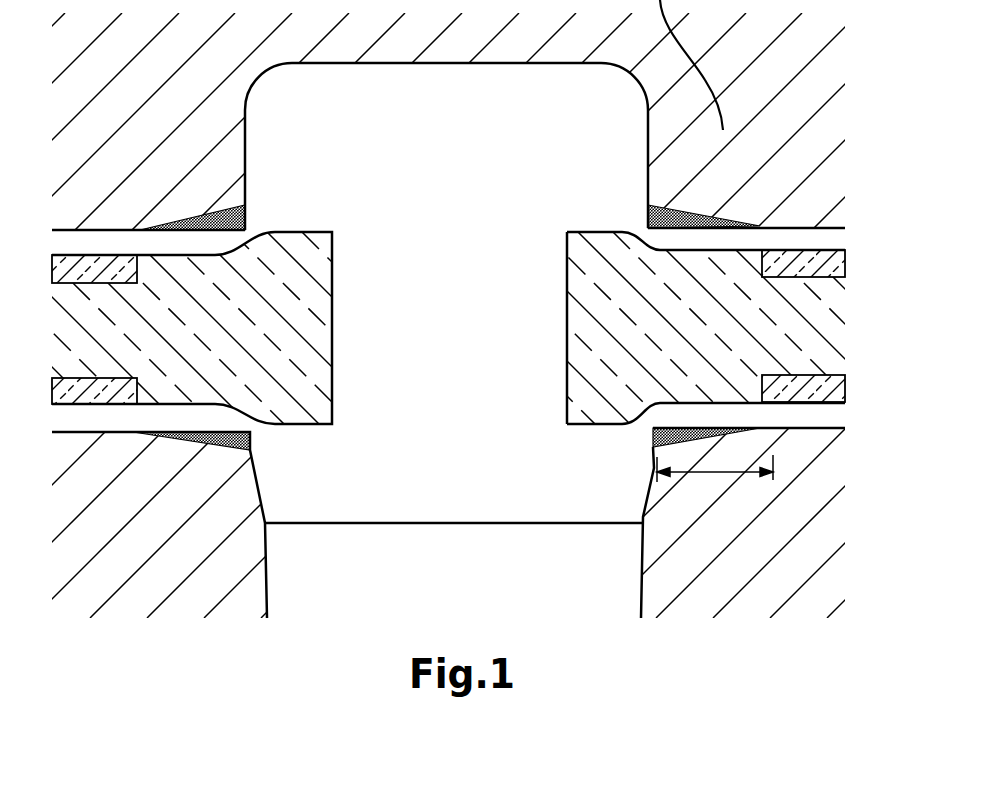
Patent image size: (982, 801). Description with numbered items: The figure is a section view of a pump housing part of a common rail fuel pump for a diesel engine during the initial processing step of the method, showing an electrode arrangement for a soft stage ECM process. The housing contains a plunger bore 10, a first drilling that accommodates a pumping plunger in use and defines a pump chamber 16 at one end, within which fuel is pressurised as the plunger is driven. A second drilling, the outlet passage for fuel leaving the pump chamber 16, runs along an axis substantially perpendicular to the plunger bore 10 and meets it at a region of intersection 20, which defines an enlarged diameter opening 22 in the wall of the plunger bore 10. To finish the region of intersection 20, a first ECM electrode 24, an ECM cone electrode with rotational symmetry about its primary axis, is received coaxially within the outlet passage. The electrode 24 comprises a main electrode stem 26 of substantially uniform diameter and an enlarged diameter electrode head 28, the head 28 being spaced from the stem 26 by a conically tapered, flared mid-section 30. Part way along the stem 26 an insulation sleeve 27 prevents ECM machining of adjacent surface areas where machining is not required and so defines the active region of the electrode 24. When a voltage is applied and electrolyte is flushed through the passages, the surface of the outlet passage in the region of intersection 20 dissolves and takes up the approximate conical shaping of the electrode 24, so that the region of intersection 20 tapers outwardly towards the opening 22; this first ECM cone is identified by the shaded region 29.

The plunger bore 10 is at (641, 588).
The pump chamber 16 is at (477, 141).
The region of intersection 20 is at (715, 476).
The enlarged diameter opening 22 is at (638, 219).
The first ECM electrode 24 is at (675, 335).
The main electrode stem 26 is at (717, 347).
The insulation sleeve 27 is at (82, 0).
The electrode head 28 is at (585, 297).
The shaded region 29 is at (203, 216).
The mid-section 30 is at (653, 405).